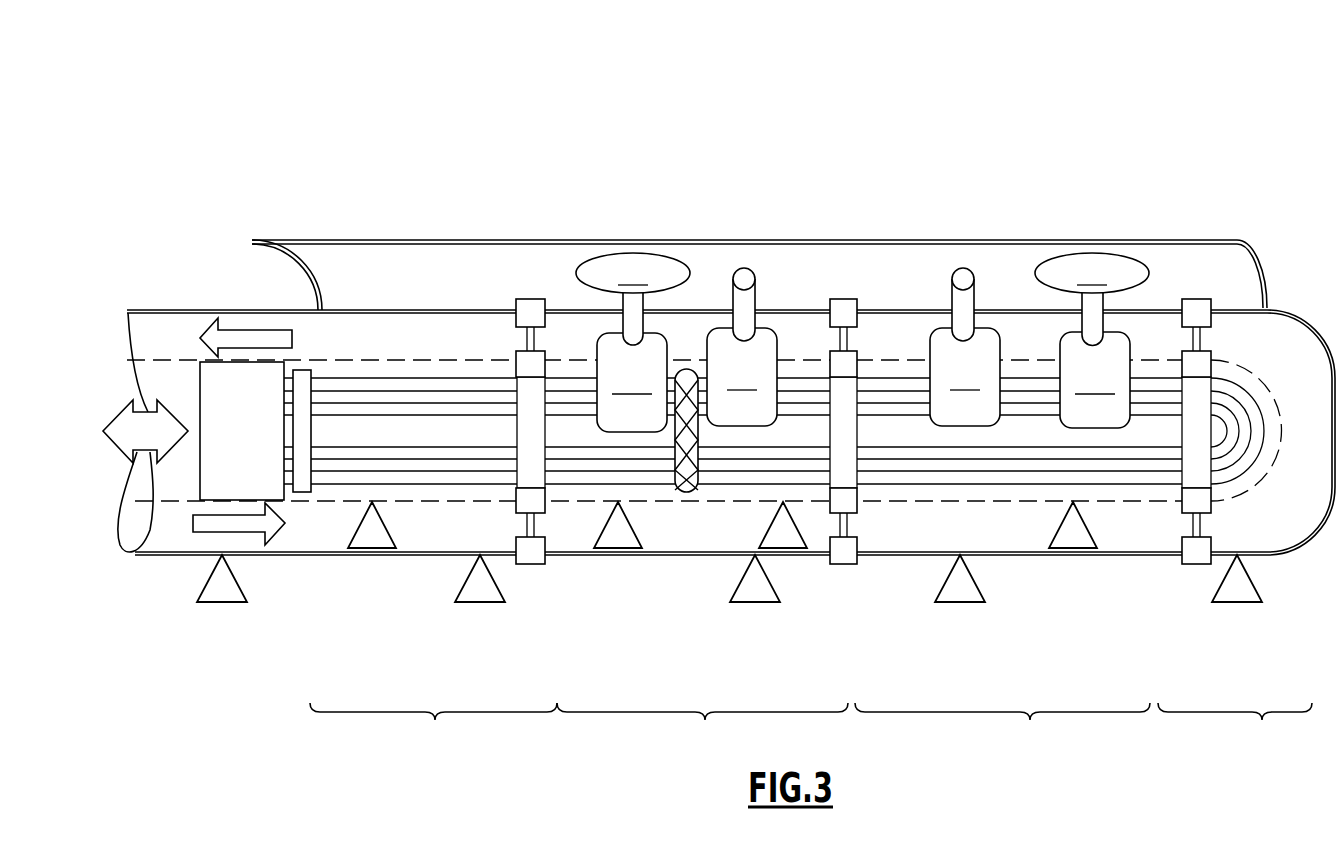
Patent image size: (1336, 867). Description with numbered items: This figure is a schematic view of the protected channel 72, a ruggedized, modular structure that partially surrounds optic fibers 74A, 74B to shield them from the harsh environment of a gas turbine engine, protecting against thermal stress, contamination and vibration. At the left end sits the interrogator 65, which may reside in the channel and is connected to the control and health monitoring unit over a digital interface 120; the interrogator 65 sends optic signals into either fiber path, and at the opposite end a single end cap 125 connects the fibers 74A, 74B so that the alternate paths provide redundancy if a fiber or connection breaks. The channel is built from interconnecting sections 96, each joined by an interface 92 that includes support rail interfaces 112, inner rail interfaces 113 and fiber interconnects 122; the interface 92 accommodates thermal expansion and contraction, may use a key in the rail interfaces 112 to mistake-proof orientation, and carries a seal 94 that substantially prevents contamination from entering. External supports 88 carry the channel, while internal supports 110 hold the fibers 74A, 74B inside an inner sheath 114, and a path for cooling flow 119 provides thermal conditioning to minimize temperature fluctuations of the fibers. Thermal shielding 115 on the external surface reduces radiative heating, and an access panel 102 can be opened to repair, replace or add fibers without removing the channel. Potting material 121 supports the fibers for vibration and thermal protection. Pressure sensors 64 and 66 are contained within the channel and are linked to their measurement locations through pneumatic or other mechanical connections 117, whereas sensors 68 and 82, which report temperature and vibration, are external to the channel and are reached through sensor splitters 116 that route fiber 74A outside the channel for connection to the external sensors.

The protected channel 72 is at (1013, 158).
The access panel 102 is at (372, 258).
The interrogator 65 is at (250, 384).
The optic fiber 74A is at (362, 402).
The optic fiber 74B is at (358, 464).
The fiber interconnect 122 is at (530, 405).
The interface 92 is at (527, 296).
The seal 94 is at (541, 346).
The inner rail interface 113 is at (538, 502).
The support rail interface 112 is at (533, 556).
The sensor splitter 116 is at (863, 362).
The sensor 68 is at (633, 273).
The sensor 82 is at (1092, 273).
The sensor 64 is at (742, 377).
The sensor 66 is at (965, 377).
The pneumatic or mechanical connection 117 is at (761, 296).
The potting material 121 is at (688, 492).
The internal support 110 is at (390, 518).
The external support 88 is at (222, 590).
The interconnecting section 96 is at (730, 727).
The end cap 125 is at (1235, 727).
The digital interface 120 is at (124, 430).
The path for cooling flow 119 is at (206, 521).
The inner sheath 114 is at (1122, 506).
The thermal shielding 115 is at (1026, 562).